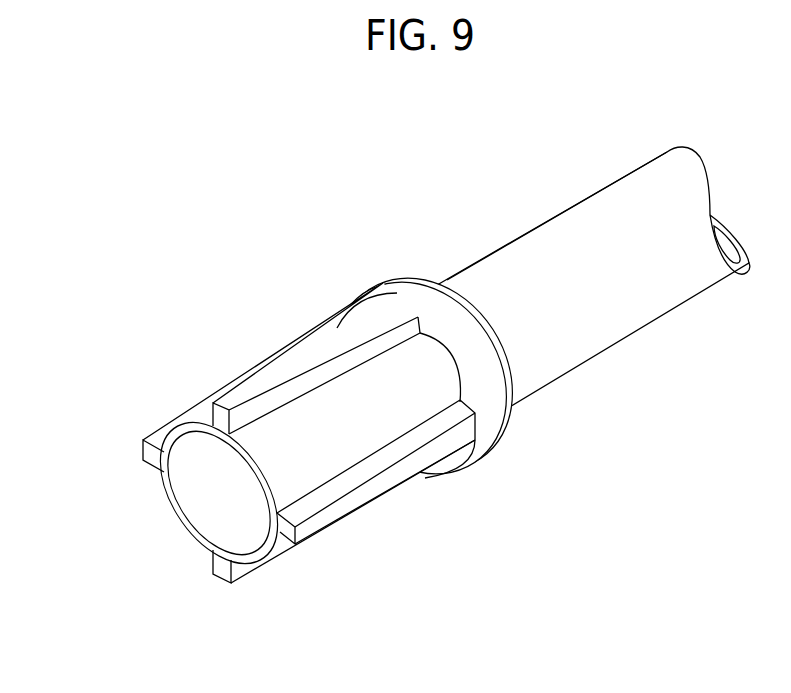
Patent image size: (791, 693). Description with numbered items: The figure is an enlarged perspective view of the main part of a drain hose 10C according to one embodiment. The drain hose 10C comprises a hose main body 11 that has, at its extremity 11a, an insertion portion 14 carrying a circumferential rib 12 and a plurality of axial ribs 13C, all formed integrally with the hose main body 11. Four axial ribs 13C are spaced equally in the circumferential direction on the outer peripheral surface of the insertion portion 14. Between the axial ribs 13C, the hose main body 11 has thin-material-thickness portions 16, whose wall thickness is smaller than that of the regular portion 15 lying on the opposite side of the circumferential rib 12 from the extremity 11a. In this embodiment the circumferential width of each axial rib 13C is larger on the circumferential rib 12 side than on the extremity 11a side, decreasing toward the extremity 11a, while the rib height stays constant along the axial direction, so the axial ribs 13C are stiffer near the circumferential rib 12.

The drain hose 10C is at (257, 423).
The hose main body 11 is at (658, 138).
The extremity 11a is at (198, 525).
The circumferential rib 12 is at (423, 287).
The axial rib 13C is at (293, 366).
The insertion portion 14 is at (375, 271).
The regular portion 15 is at (613, 202).
The thin-material-thickness portion 16 is at (197, 414).